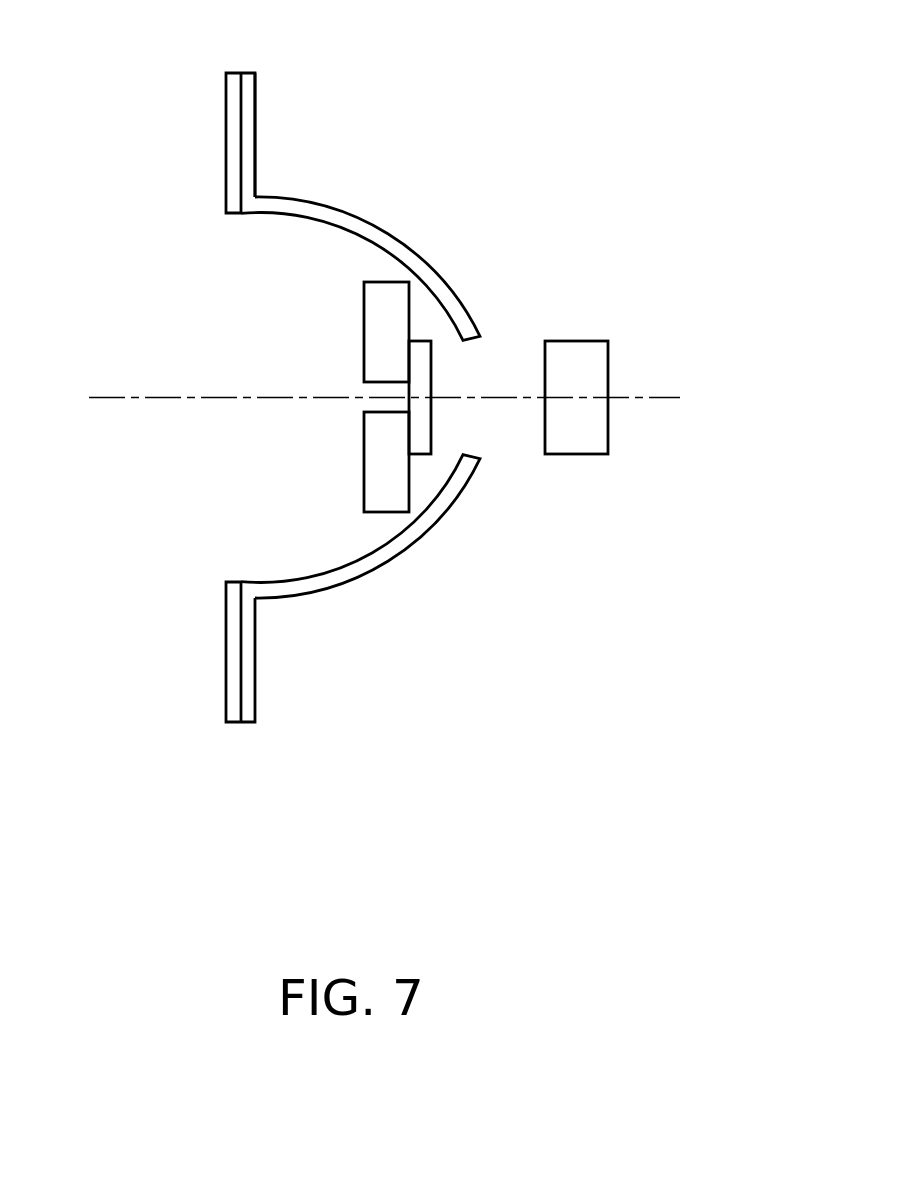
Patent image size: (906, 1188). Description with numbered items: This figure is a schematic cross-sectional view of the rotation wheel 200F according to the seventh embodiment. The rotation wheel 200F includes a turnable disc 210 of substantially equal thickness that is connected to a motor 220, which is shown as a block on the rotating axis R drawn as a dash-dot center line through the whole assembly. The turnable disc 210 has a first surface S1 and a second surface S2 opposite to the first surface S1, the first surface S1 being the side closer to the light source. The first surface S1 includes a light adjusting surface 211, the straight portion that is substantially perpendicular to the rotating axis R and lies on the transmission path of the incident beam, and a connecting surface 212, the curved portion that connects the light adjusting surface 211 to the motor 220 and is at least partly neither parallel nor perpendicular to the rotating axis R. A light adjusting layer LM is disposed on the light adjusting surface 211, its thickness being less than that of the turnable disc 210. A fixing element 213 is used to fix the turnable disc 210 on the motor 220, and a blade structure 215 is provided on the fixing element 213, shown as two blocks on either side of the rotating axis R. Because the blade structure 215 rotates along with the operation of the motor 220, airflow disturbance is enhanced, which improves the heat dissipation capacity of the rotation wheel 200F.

The turnable disc 210 is at (425, 71).
The light adjusting surface 211 is at (261, 119).
The connecting surface 212 is at (389, 244).
The fixing element 213 is at (419, 417).
The blade structure 215 is at (377, 477).
The motor 220 is at (593, 368).
The first surface S1 is at (232, 101).
The second surface S2 is at (264, 100).
The rotating axis R is at (147, 397).
The light adjusting layer LM is at (233, 690).
The rotation wheel 200F is at (735, 887).